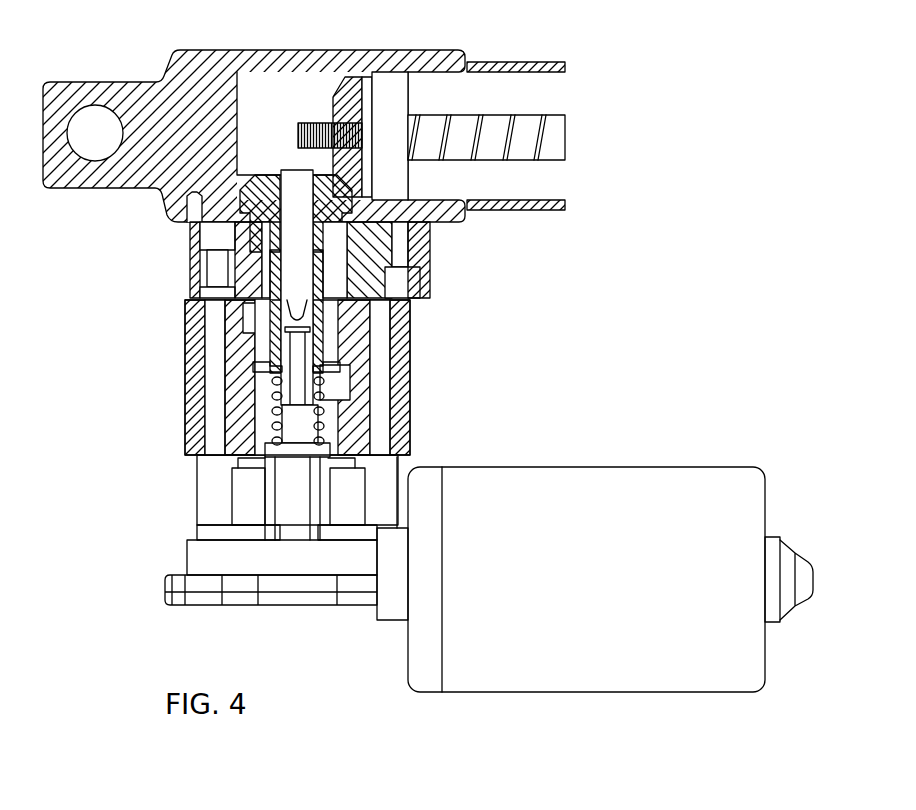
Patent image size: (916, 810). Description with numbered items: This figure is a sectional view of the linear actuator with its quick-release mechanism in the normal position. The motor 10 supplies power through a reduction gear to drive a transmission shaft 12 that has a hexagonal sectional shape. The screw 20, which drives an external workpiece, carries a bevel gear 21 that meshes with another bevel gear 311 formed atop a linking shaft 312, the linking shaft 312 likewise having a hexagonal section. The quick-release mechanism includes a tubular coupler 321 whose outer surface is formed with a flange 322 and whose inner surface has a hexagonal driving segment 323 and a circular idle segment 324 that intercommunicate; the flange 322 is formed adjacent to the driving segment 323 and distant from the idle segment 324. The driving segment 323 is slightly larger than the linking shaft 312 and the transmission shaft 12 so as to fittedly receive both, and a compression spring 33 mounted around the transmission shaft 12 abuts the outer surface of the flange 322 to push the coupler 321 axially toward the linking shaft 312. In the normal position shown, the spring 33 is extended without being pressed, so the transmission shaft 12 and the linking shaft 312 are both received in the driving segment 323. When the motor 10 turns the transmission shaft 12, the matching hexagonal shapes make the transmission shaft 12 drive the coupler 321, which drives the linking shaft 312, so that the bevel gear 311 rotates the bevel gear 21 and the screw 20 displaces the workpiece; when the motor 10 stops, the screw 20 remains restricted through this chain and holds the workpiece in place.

The motor 10 is at (597, 470).
The transmission shaft 12 is at (300, 382).
The screw 20 is at (518, 120).
The bevel gear 21 is at (340, 90).
The bevel gear 311 is at (250, 174).
The linking shaft 312 is at (335, 305).
The coupler 321 is at (268, 318).
The flange 322 is at (253, 371).
The driving segment 323 is at (320, 338).
The idle segment 324 is at (277, 277).
The spring 33 is at (272, 425).